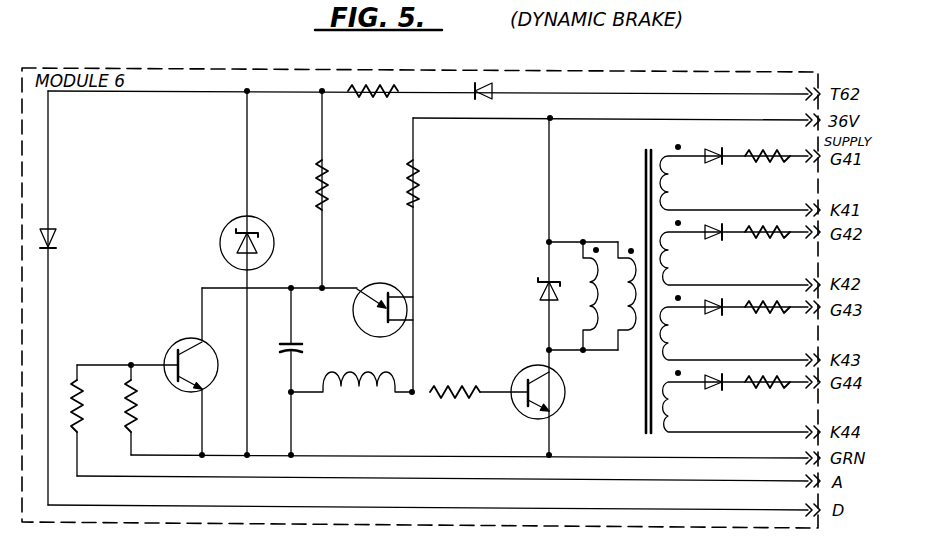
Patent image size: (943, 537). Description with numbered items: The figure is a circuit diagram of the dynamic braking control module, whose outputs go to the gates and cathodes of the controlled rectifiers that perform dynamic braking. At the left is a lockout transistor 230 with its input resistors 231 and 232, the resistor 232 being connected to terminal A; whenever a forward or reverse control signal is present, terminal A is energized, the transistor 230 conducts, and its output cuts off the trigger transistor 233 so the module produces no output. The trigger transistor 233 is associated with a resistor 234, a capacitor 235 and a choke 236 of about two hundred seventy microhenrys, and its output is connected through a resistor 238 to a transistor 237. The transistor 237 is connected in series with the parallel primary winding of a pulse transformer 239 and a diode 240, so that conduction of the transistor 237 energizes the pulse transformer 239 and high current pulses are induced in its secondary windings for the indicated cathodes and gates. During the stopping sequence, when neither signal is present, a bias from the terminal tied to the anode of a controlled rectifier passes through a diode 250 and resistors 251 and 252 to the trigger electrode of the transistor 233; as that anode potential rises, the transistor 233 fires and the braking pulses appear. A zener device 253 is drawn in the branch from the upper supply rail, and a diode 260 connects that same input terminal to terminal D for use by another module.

The lockout transistor 230 is at (178, 343).
The input resistor 231 is at (137, 407).
The input resistor 232 is at (68, 398).
The trigger transistor 233 is at (395, 270).
The resistor 234 is at (409, 188).
The capacitor 235 is at (306, 347).
The choke 236 is at (367, 385).
The transistor 237 is at (517, 374).
The resistor 238 is at (467, 399).
The pulse transformer 239 is at (636, 240).
The diode 240 is at (536, 293).
The diode 250 is at (475, 97).
The resistor 251 is at (381, 99).
The resistor 252 is at (318, 183).
The zener diode 253 is at (220, 246).
The diode 260 is at (58, 242).